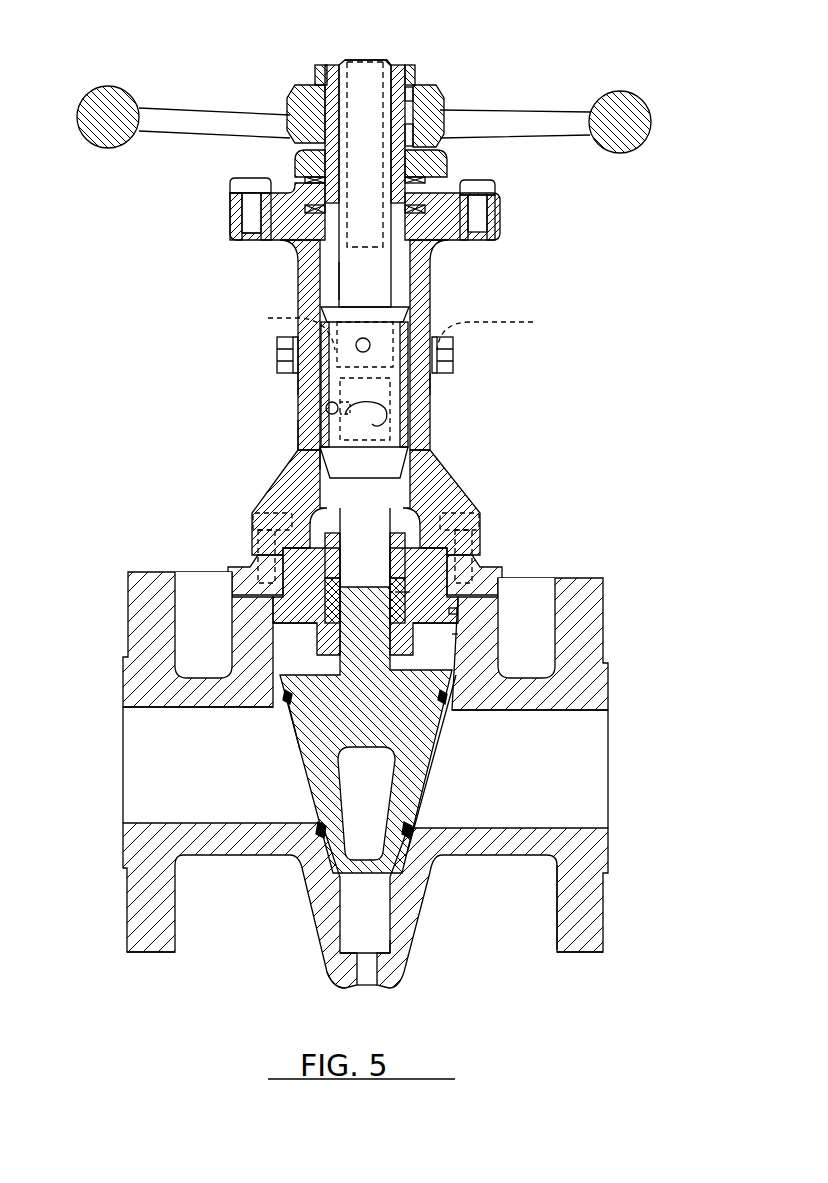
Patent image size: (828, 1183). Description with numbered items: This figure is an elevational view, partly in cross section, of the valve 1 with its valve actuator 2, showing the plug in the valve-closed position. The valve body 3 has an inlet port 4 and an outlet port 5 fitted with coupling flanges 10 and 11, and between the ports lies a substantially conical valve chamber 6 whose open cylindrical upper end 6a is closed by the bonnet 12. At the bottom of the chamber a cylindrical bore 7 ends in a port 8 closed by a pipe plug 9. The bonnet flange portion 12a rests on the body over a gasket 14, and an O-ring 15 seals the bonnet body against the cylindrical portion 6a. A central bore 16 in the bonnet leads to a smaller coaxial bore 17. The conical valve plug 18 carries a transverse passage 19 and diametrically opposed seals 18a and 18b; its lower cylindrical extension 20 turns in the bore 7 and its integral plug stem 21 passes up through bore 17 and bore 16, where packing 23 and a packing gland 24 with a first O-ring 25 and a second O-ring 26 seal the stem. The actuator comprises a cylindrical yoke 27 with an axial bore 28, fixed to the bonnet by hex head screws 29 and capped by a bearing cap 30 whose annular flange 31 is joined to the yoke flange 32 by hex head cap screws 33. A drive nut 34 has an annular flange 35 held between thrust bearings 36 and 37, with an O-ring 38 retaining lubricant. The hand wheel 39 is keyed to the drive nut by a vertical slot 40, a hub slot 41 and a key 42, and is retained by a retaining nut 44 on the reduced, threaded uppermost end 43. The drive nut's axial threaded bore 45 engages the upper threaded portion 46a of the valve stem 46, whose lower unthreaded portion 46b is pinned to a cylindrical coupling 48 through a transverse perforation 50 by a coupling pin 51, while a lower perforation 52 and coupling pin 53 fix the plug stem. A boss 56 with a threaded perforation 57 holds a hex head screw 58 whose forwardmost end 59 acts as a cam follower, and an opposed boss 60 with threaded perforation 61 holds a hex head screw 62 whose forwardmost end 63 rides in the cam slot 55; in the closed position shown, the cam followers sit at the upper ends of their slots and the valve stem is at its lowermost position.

The valve 1 is at (607, 632).
The valve actuator 2 is at (293, 253).
The valve body 3 is at (540, 865).
The inlet port 4 is at (512, 712).
The outlet port 5 is at (182, 712).
The valve chamber 6 is at (425, 753).
The cylindrical upper end of valve chamber 6a is at (458, 636).
The cylindrical bore 7 is at (388, 927).
The port 8 is at (386, 986).
The pipe plug 9 is at (343, 987).
The coupling flange 10 is at (552, 953).
The coupling flange 11 is at (165, 953).
The bonnet 12 is at (502, 577).
The bonnet flange portion 12a is at (237, 576).
The gasket 14 is at (500, 594).
The O-ring 15 is at (295, 639).
The central bore 16 is at (403, 592).
The second coaxial bore 17 is at (412, 655).
The valve plug 18 is at (302, 731).
The seal 18a is at (319, 826).
The seal 18b is at (411, 830).
The transverse passage 19 is at (365, 750).
The cylindrical extension 20 is at (380, 908).
The plug stem 21 is at (391, 671).
The packing 23 is at (457, 613).
The packing gland 24 is at (478, 537).
The first O-ring 25 is at (340, 548).
The second O-ring 26 is at (341, 569).
The yoke 27 is at (299, 433).
The axial bore 28 is at (322, 478).
The hex head screws 29 is at (258, 516).
The bearing cap 30 is at (290, 172).
The annular flange 31 is at (232, 207).
The flange 32 is at (232, 231).
The hex head cap screws 33 is at (238, 188).
The drive nut 34 is at (306, 122).
The annular flange 35 is at (416, 188).
The thrust bearing 36 is at (430, 170).
The thrust bearing 37 is at (499, 231).
The O-ring 38 is at (308, 160).
The hand wheel 39 is at (651, 118).
The vertical slot 40 is at (413, 99).
The slot 41 is at (413, 140).
The key 42 is at (425, 111).
The uppermost end of drive nut 43 is at (394, 63).
The retaining nut 44 is at (415, 72).
The axial threaded bore 45 is at (318, 77).
The valve stem 46 is at (378, 156).
The upper threaded portion 46a is at (365, 72).
The lower unthreaded portion 46b is at (383, 276).
The coupling 48 is at (408, 423).
The transverse perforation 50 is at (363, 337).
The coupling pin 51 is at (372, 343).
The transverse perforation 52 is at (326, 408).
The coupling pin 53 is at (333, 414).
The cam slot 55 is at (365, 411).
The boss 56 is at (298, 382).
The threaded perforation 57 is at (279, 350).
The hex head screw 58 is at (282, 360).
The forwardmost end of screw 59 is at (283, 328).
The boss 60 is at (430, 382).
The threaded perforation 61 is at (453, 352).
The hex head screw 62 is at (451, 372).
The forwardmost end of screw 63 is at (495, 330).